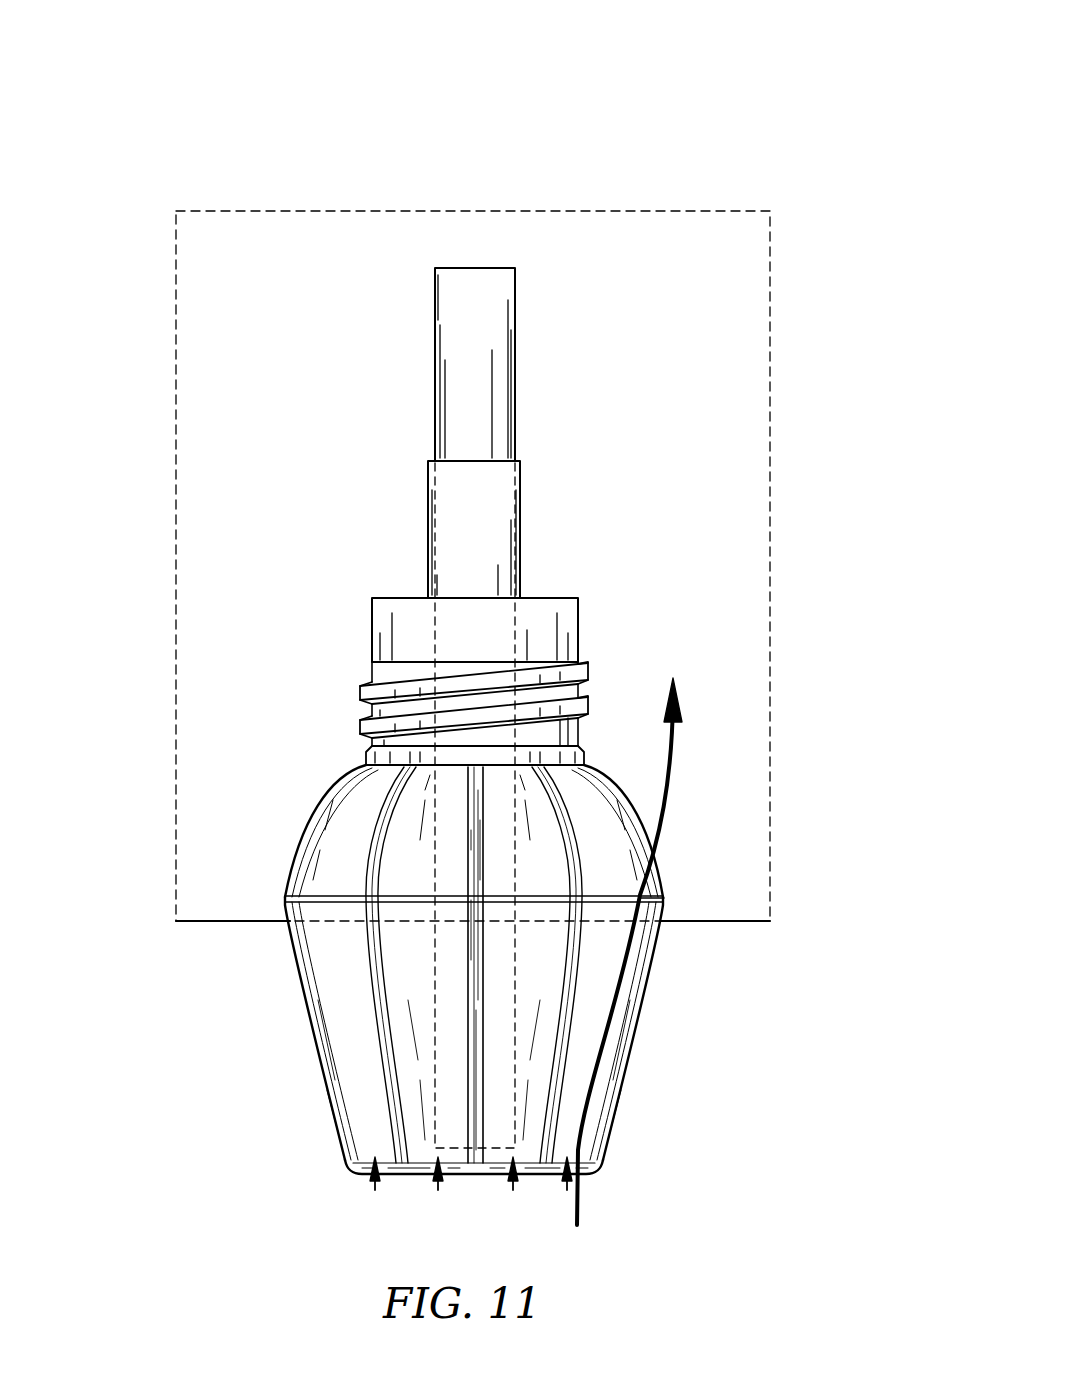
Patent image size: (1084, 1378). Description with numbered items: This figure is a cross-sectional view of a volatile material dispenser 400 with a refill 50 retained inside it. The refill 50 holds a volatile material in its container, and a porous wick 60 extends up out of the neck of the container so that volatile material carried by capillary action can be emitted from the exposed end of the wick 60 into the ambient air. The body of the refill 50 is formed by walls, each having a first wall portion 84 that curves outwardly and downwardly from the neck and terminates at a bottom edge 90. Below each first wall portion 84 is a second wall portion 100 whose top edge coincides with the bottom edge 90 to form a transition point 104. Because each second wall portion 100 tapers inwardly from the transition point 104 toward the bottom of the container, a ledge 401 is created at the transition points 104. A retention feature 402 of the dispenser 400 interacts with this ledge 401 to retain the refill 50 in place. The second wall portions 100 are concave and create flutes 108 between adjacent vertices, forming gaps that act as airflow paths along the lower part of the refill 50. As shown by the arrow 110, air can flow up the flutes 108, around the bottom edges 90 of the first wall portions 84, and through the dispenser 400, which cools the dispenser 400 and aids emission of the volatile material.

The volatile material dispenser 400 is at (739, 145).
The refill 50 is at (634, 618).
The porous wick 60 is at (515, 422).
The first wall portion 84 is at (327, 823).
The bottom edge 90 is at (612, 893).
The second wall portion 100 is at (410, 1028).
The transition point 104 is at (287, 898).
The flute 108 is at (375, 1192).
The arrow 110 is at (580, 1193).
The ledge 401 is at (665, 898).
The retention feature 402 is at (237, 922).